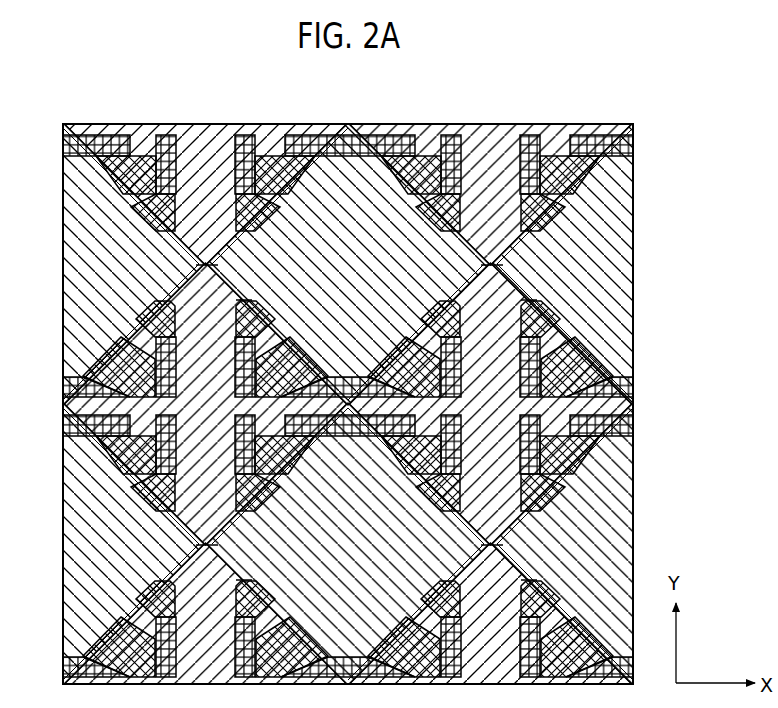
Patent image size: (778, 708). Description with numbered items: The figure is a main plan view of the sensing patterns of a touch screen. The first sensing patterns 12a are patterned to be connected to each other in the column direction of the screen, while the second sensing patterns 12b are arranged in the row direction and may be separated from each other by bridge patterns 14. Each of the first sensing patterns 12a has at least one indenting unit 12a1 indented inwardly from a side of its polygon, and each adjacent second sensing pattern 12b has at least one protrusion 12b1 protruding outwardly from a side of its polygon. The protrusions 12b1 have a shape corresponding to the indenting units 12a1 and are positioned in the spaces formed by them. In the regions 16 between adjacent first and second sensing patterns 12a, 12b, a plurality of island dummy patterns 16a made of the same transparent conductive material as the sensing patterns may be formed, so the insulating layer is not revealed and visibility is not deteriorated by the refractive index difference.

The first sensing patterns 12a is at (513, 300).
The indenting units 12a1 is at (458, 378).
The second sensing patterns 12b is at (338, 177).
The protrusions 12b1 is at (417, 332).
The bridge patterns 14 is at (488, 263).
The regions 16 is at (232, 320).
The island dummy patterns 16a is at (247, 303).